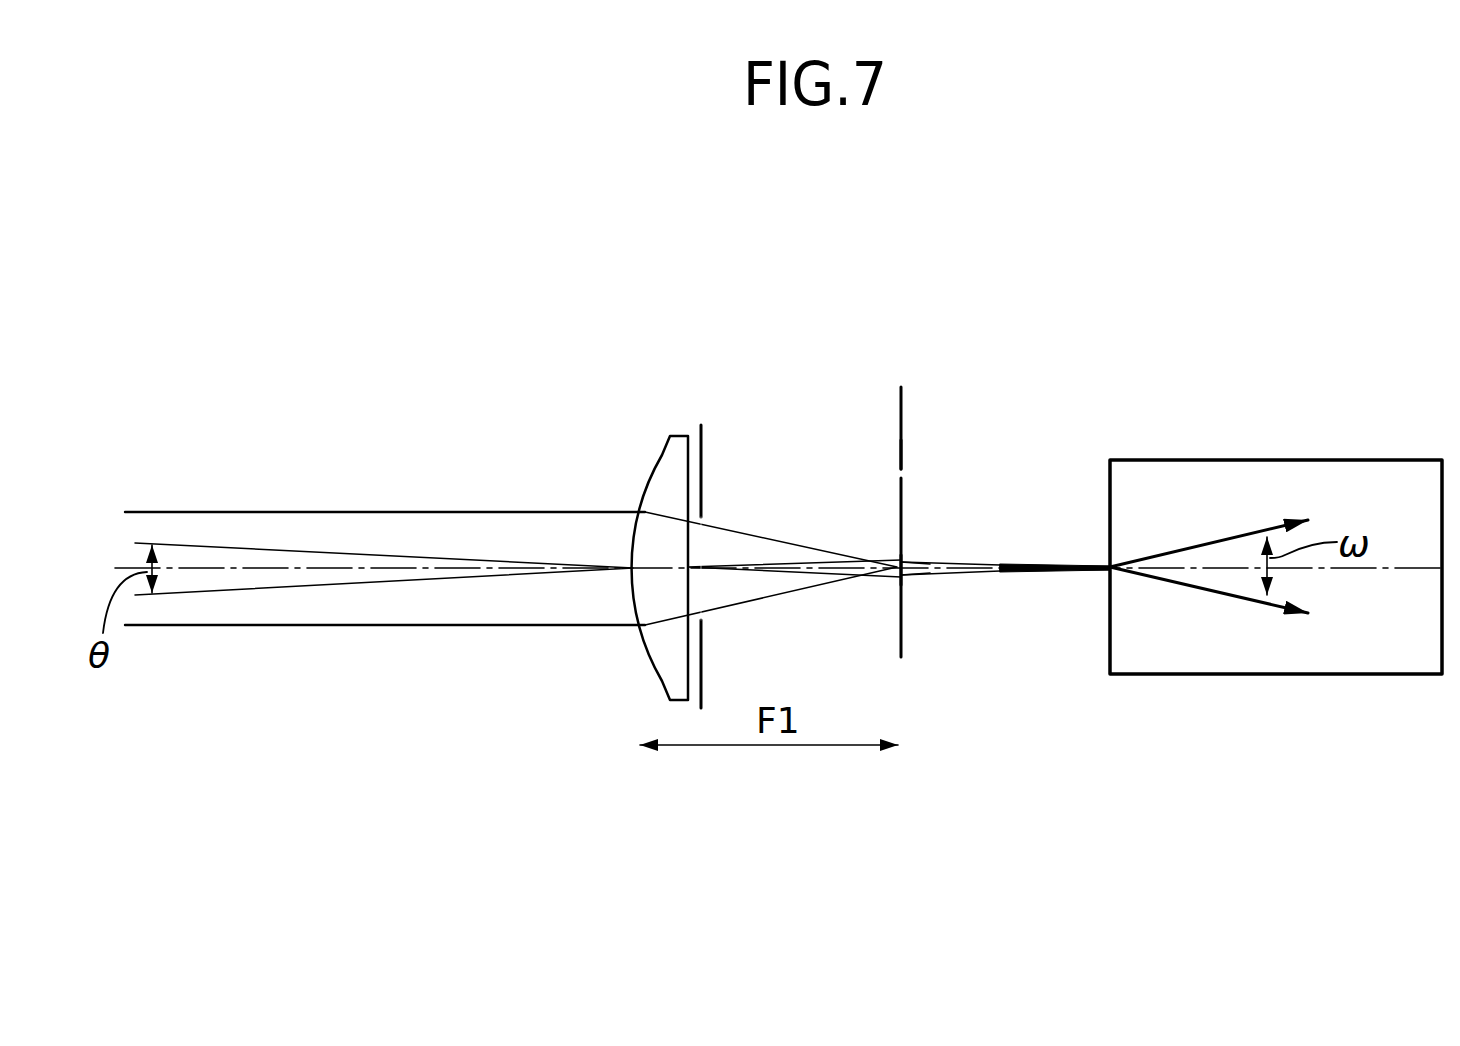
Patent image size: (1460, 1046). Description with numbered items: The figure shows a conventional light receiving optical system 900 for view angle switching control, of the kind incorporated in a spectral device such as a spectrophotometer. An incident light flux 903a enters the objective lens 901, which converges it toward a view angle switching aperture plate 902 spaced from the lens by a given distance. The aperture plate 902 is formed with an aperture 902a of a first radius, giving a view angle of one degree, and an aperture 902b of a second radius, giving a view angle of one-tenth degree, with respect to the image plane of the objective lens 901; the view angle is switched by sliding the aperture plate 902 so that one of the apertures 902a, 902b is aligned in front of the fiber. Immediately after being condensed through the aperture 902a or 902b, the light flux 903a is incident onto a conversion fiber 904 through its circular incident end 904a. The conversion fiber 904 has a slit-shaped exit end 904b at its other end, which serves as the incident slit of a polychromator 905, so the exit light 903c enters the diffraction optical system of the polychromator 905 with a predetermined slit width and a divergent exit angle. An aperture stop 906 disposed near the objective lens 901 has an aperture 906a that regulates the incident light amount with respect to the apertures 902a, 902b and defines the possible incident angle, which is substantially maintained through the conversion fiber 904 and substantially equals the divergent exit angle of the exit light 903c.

The light receiving optical system 900 is at (942, 812).
The objective lens 901 is at (668, 470).
The view angle switching aperture plate 902 is at (897, 405).
The aperture 902a is at (888, 577).
The aperture 902b is at (907, 473).
The light flux 903a is at (238, 512).
The exit light 903c is at (1223, 540).
The conversion fiber 904 is at (992, 562).
The incident end 904a is at (910, 577).
The exit end 904b is at (1108, 573).
The polychromator 905 is at (1364, 460).
The aperture stop 906 is at (702, 446).
The aperture 906a is at (698, 553).